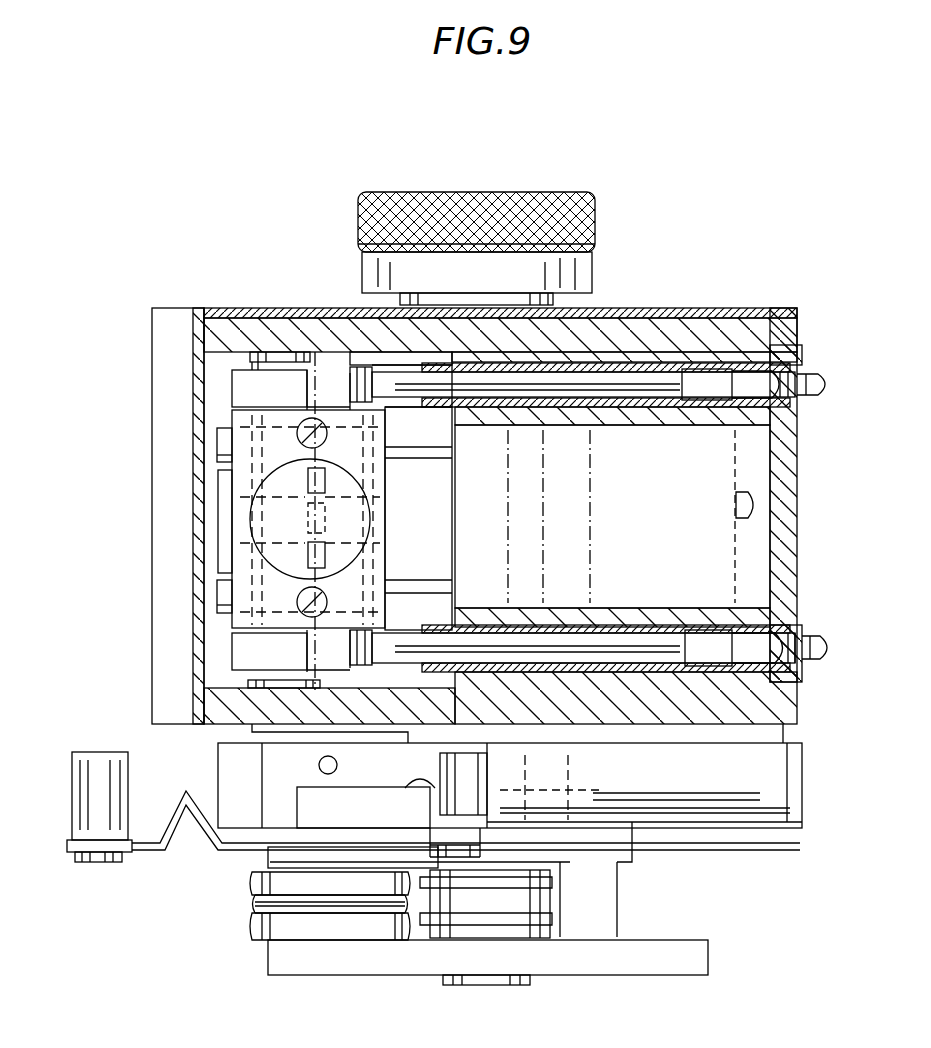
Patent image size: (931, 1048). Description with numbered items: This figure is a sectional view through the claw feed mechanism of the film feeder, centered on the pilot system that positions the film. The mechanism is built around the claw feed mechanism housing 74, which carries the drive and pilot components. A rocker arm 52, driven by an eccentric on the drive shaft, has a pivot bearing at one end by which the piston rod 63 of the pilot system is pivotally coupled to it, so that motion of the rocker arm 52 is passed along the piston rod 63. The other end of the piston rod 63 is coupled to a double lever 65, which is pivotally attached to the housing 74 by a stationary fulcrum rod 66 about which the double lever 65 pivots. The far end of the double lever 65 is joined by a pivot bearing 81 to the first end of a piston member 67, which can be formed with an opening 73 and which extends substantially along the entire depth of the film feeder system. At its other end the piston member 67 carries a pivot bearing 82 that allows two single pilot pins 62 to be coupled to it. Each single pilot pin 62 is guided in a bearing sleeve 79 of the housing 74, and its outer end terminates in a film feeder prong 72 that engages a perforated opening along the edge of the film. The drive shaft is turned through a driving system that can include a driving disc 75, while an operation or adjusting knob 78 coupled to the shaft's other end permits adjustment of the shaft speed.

The rocker arm 52 is at (232, 445).
The single pilot pin 62 is at (396, 386).
The piston rod 63 is at (230, 556).
The double lever 65 is at (238, 390).
The stationary fulcrum rod 66 is at (297, 383).
The piston member 67 is at (250, 462).
The film feeder prong 72 is at (812, 397).
The opening 73 is at (262, 525).
The claw feed mechanism housing 74 is at (735, 318).
The driving disc 75 is at (255, 904).
The adjusting knob 78 is at (586, 224).
The bearing sleeve 79 is at (678, 364).
The pivot bearing 81 is at (255, 362).
The pivot bearing 82 is at (368, 376).